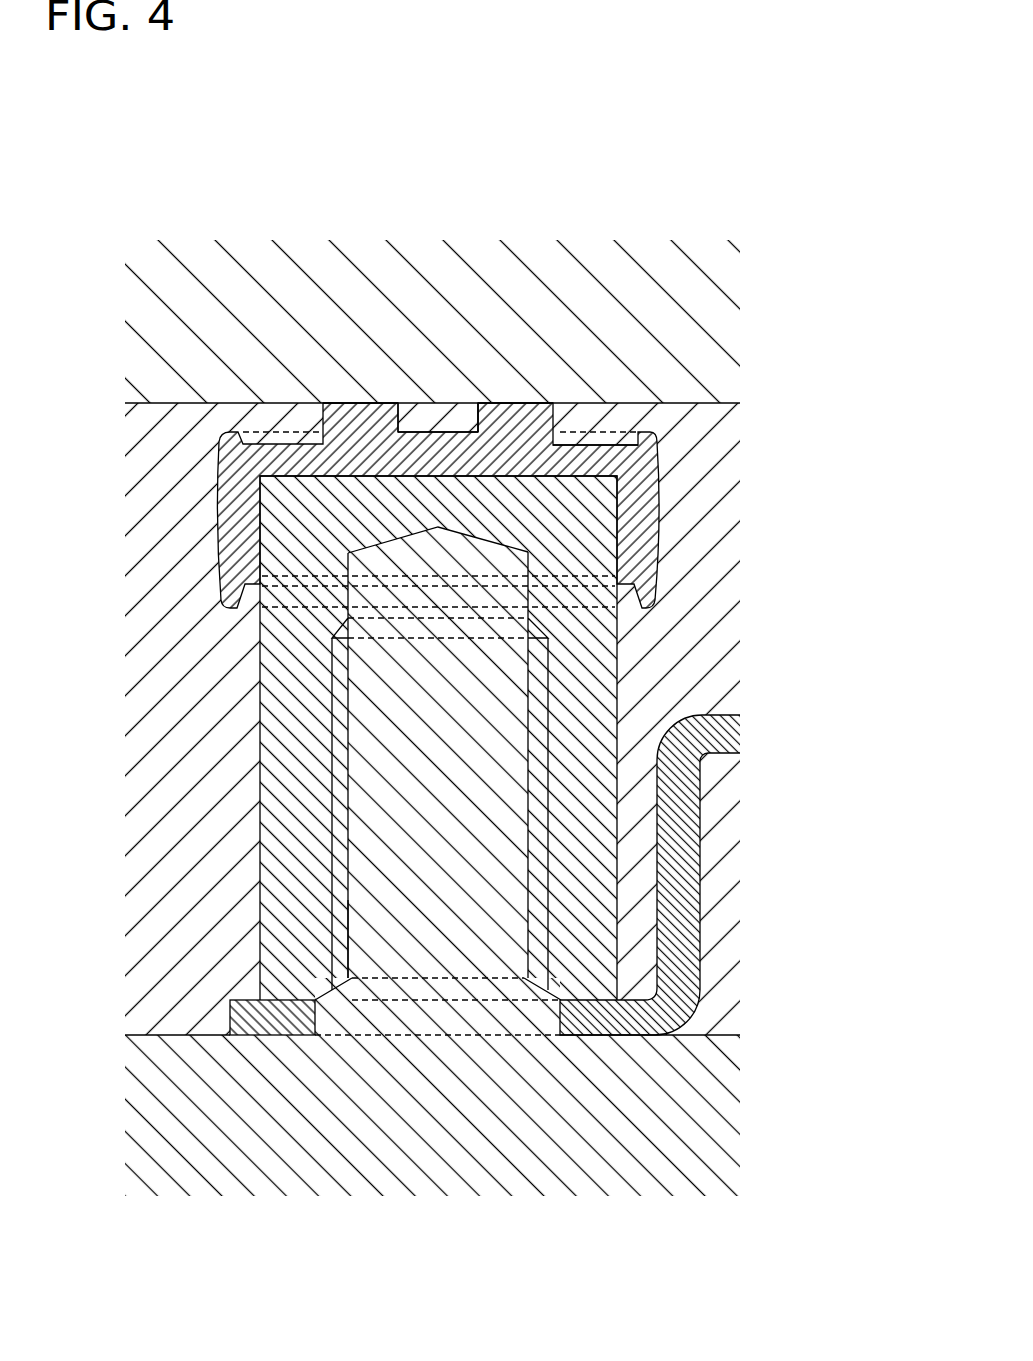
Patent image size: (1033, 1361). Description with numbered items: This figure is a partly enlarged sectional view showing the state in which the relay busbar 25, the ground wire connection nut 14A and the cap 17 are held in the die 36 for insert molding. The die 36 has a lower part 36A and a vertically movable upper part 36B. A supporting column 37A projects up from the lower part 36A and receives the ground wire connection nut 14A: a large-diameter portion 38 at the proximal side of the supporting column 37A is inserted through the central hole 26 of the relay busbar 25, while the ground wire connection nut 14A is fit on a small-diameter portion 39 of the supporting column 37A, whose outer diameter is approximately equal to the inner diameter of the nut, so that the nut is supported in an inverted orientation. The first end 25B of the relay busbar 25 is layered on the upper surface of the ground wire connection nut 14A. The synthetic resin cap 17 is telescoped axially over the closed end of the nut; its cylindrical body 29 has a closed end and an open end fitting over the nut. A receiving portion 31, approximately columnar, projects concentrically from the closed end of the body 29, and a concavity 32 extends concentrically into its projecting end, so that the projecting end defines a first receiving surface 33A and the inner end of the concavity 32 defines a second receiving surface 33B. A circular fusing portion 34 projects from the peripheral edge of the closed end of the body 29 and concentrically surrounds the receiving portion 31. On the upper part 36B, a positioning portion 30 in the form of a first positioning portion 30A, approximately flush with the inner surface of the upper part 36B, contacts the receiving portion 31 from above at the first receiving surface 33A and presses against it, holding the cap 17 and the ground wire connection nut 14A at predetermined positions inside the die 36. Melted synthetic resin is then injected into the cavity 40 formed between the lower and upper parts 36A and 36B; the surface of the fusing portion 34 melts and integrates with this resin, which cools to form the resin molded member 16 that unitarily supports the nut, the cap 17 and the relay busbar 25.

The ground wire connection nut 14A is at (590, 640).
The resin molded member 16 is at (722, 962).
The cap 17 is at (291, 455).
The relay busbar 25 is at (647, 1017).
The first end of the relay busbar 25B is at (245, 1020).
The central hole 26 is at (318, 1016).
The cylindrical body 29 is at (642, 521).
The positioning portion 30 is at (448, 360).
The first positioning portion 30A is at (372, 412).
The receiving portion 31 is at (615, 404).
The concavity 32 is at (472, 412).
The first receiving surface 33A is at (373, 403).
The second receiving surface 33B is at (432, 434).
The fusing portion 34 is at (235, 440).
The die 36 is at (507, 718).
The lower part of the die 36A is at (718, 1097).
The upper part of the die 36B is at (720, 320).
The supporting column 37A is at (402, 913).
The large-diameter portion 38 is at (513, 1017).
The small-diameter portion 39 is at (473, 913).
The cavity 40 is at (683, 410).